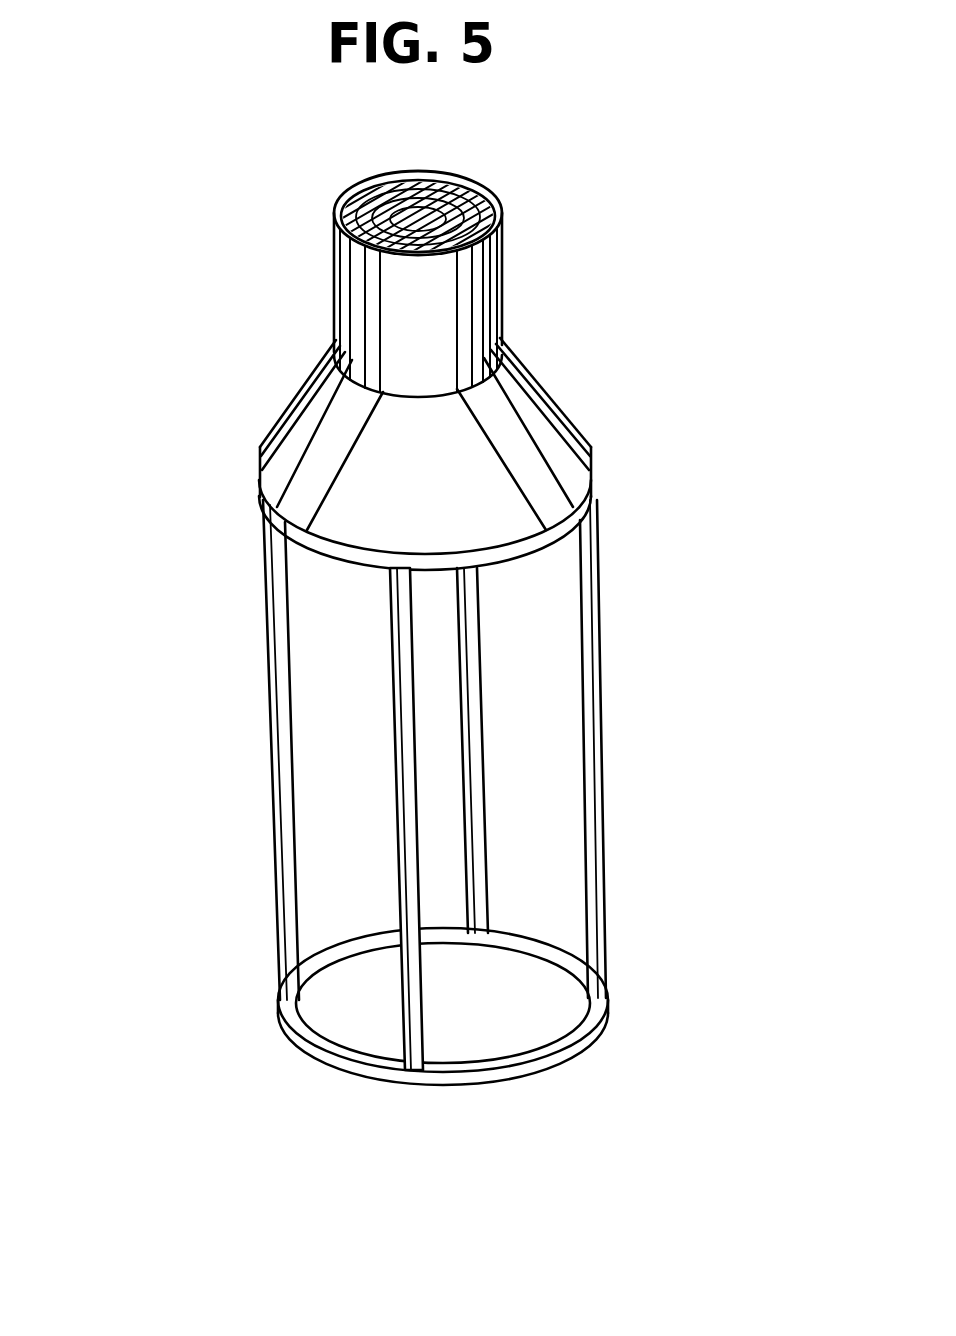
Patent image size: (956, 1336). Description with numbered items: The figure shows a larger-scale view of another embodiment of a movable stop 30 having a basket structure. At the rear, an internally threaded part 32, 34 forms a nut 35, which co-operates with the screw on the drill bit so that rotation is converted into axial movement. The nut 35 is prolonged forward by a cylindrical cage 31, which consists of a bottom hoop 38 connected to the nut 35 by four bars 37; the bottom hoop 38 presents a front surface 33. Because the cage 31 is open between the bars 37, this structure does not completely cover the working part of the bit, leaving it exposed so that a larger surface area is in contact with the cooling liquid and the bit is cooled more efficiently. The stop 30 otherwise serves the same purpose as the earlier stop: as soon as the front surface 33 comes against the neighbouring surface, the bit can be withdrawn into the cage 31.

The stop 30 is at (616, 521).
The cylindrical cage 31 is at (600, 822).
The rear internally threaded part 32 is at (370, 290).
The front surface 33 is at (387, 1083).
The internal thread 34 is at (378, 200).
The nut 35 is at (496, 172).
The bars 37 is at (590, 838).
The bottom hoop 38 is at (565, 1055).